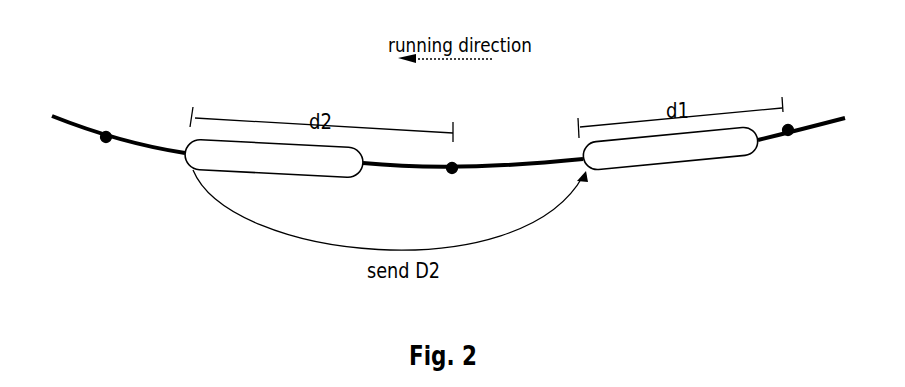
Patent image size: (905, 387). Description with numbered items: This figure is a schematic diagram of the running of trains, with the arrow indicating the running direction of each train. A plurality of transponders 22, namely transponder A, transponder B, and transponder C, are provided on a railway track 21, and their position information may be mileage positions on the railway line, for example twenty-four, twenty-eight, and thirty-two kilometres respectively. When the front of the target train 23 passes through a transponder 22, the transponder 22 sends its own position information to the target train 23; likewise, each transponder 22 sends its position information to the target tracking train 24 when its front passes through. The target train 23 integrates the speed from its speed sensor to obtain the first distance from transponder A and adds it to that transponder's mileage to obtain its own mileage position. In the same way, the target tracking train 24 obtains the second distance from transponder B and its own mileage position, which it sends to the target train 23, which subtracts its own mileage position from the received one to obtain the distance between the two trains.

The railway track 21 is at (78, 121).
The transponder 22 is at (110, 133).
The target train 23 is at (685, 150).
The target tracking train 24 is at (328, 168).